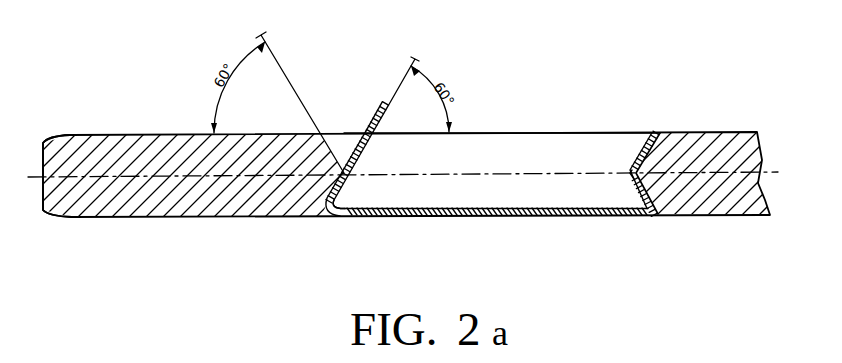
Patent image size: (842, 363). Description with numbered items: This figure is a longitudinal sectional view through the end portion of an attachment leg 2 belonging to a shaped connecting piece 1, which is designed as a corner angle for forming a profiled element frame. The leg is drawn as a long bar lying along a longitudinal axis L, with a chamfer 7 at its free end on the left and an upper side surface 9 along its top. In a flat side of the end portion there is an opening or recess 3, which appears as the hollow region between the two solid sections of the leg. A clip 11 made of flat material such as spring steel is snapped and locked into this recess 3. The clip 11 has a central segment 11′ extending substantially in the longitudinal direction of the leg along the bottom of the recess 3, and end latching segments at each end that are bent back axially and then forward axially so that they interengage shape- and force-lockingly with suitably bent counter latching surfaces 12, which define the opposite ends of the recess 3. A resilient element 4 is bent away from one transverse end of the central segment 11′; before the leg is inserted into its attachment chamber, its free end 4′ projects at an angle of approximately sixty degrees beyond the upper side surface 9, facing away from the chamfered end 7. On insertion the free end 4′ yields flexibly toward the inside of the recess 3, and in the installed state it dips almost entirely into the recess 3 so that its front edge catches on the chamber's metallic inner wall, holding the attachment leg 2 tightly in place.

The shaped connecting piece 1 is at (727, 115).
The attachment leg 2 is at (138, 151).
The recess 3 is at (522, 141).
The resilient element 4 is at (388, 146).
The free end of the resilient element 4′ is at (382, 105).
The chamfer 7 is at (45, 141).
The upper side surface 9 is at (683, 132).
The clip 11 is at (489, 160).
The central segment 11′ is at (551, 216).
The counter latching surfaces 12 is at (344, 203).
The longitudinal axis L is at (541, 173).